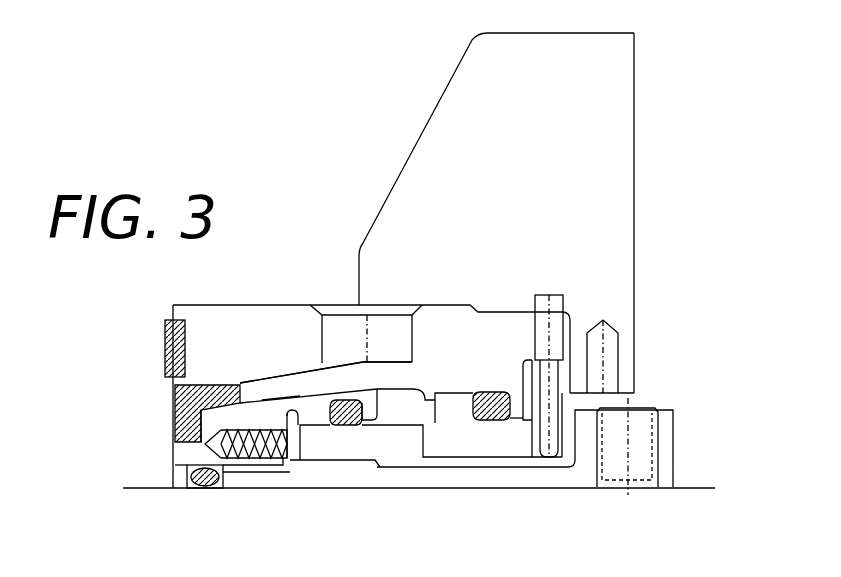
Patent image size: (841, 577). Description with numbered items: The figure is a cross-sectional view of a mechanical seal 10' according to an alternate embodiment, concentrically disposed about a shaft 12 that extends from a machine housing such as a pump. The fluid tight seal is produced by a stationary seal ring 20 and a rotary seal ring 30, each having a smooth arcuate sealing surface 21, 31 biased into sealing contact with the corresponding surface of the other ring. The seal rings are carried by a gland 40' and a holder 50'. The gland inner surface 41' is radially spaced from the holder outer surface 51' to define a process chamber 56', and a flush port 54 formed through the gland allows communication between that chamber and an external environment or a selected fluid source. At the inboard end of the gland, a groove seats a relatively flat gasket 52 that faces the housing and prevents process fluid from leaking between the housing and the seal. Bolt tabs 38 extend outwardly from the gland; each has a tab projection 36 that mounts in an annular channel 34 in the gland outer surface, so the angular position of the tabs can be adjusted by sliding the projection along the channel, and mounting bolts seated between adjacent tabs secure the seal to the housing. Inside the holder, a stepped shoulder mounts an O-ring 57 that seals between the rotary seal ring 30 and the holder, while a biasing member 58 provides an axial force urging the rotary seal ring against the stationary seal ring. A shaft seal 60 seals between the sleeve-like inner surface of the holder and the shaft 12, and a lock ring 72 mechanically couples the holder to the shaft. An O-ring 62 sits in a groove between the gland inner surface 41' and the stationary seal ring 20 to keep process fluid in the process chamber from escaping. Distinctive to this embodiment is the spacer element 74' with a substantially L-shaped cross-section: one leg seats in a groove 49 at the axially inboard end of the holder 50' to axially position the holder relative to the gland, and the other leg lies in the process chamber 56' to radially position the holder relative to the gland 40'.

The mechanical seal 10' is at (311, 118).
The shaft 12 is at (689, 487).
The stationary seal ring 20 is at (490, 451).
The arcuate sealing surface 21 is at (438, 424).
The rotary seal ring 30 is at (378, 455).
The arcuate sealing surface 31 is at (432, 417).
The annular channel 34 is at (535, 373).
The tab projection 36 is at (576, 392).
The bolt tab 38 is at (634, 100).
The gland 40' is at (423, 378).
The gland inner surface 41' is at (292, 354).
The groove 49 is at (206, 420).
The holder 50' is at (333, 466).
The holder outer surface 51' is at (273, 411).
The gasket 52 is at (165, 340).
The flush port 54 is at (340, 318).
The process chamber 56' is at (337, 372).
The O-ring 57 is at (356, 400).
The biasing member 58 is at (267, 457).
The shaft seal 60 is at (177, 463).
The O-ring 62 is at (488, 392).
The lock ring 72 is at (645, 407).
The spacer element 74' is at (170, 413).